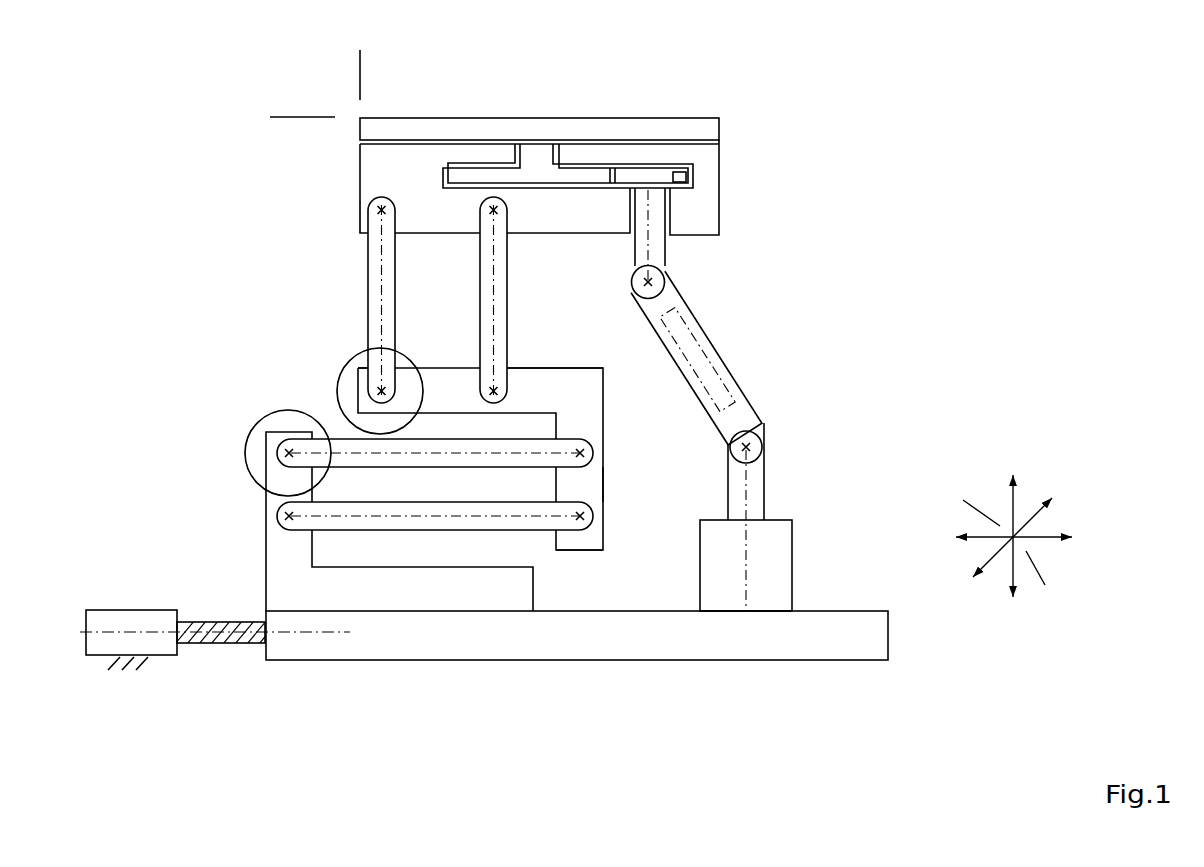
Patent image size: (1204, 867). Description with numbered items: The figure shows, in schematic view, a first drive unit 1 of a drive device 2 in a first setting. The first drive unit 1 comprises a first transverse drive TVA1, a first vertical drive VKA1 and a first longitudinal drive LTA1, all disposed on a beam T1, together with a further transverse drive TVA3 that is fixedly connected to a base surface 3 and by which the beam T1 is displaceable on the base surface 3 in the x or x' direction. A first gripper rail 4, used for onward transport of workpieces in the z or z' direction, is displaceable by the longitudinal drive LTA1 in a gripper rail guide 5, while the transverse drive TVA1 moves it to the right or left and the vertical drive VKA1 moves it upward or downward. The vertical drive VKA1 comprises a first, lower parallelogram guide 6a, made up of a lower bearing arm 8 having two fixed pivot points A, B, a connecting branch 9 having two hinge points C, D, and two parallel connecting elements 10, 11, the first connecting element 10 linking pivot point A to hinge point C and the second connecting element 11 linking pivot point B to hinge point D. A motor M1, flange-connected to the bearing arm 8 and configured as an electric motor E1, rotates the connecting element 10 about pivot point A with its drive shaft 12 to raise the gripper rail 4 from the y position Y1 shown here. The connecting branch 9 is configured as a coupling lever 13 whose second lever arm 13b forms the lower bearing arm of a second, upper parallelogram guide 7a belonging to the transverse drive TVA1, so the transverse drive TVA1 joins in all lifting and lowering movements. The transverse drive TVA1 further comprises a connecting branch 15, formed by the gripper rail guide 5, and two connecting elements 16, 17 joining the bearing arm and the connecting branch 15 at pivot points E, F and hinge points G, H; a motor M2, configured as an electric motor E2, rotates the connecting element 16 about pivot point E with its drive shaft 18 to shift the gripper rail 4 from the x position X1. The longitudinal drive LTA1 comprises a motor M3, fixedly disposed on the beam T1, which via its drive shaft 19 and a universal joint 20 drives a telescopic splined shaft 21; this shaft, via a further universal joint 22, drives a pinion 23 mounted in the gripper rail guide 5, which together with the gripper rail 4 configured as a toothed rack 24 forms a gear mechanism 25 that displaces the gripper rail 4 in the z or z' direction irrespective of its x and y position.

The first drive unit 1 is at (801, 111).
The drive device 2 is at (806, 84).
The base surface 3 is at (140, 665).
The first gripper rail 4 is at (705, 132).
The gripper rail guide 5 is at (713, 158).
The first, lower parallelogram guide 6a is at (330, 410).
The second, upper parallelogram guide 7a is at (330, 258).
The lower bearing arm 8 is at (283, 585).
The connecting branch 9 is at (592, 492).
The first connecting element 10 is at (562, 450).
The second connecting element 11 is at (562, 525).
The drive shaft 12 is at (286, 455).
The coupling lever 13 is at (590, 400).
The second lever arm 13b is at (530, 385).
The connecting branch 15 is at (372, 161).
The connecting element 16 is at (373, 245).
The connecting element 17 is at (500, 268).
The drive shaft 18 is at (384, 388).
The drive shaft 19 is at (756, 492).
The universal joint 20 is at (757, 435).
The telescopic splined shaft 21 is at (712, 345).
The universal joint 22 is at (660, 273).
The pinion 23 is at (676, 178).
The toothed rack 24 is at (532, 175).
The gear mechanism 25 is at (612, 162).
The pivot point A is at (286, 452).
The pivot point B is at (285, 516).
The hinge point C is at (593, 458).
The hinge point D is at (593, 527).
The pivot point E is at (345, 383).
The pivot point F is at (496, 389).
The hinge point G is at (380, 208).
The hinge point H is at (498, 212).
The motor M1 is at (264, 426).
The electric motor E1 is at (288, 453).
The motor M2 is at (340, 380).
The electric motor E2 is at (380, 391).
The motor M3 is at (780, 557).
The beam T1 is at (820, 630).
The first transverse drive TVA1 is at (256, 265).
The further transverse drive TVA3 is at (163, 599).
The first vertical drive VKA1 is at (218, 458).
The first longitudinal drive LTA1 is at (800, 306).
The x position X1 is at (383, 58).
The y position Y1 is at (305, 117).